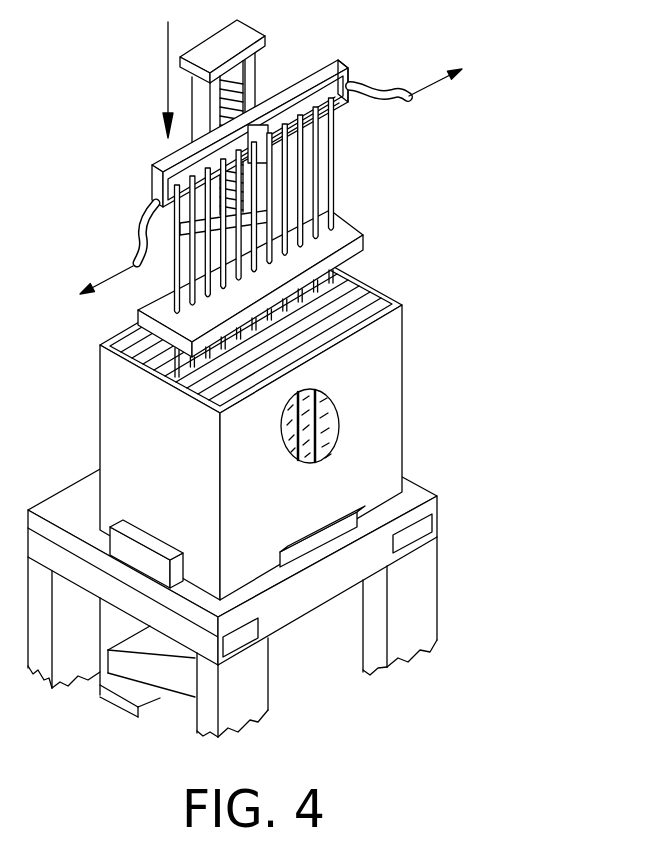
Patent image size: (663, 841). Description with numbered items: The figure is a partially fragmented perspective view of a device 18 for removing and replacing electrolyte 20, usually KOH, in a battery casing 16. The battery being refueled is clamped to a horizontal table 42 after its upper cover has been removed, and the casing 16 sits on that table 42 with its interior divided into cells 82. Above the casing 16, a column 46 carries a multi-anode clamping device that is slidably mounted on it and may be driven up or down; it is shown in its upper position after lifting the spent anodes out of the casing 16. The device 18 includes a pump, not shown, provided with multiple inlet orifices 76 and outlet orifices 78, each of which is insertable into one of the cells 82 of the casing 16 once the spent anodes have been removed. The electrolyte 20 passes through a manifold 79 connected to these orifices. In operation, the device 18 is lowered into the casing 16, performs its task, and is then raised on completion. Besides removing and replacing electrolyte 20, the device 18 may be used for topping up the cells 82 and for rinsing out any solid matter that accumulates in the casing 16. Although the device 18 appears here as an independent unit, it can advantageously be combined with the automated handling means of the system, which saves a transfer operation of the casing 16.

The battery casing 16 is at (390, 353).
The device for removing and replacing electrolyte 18 is at (466, 560).
The electrolyte 20 is at (330, 427).
The horizontal table 42 is at (430, 502).
The column 46 is at (250, 77).
The inlet orifices 76 is at (177, 368).
The outlet orifices 78 is at (165, 347).
The manifold 79 is at (337, 104).
The cells 82 is at (357, 293).